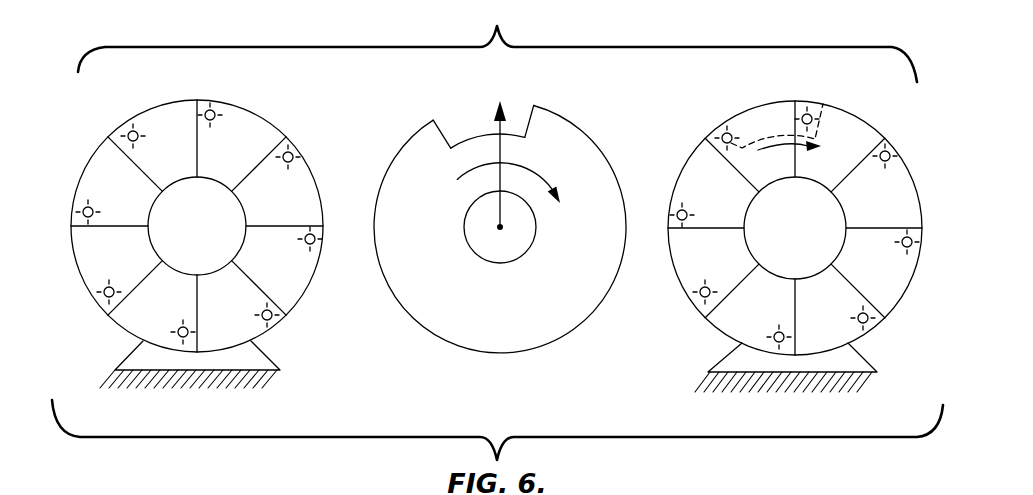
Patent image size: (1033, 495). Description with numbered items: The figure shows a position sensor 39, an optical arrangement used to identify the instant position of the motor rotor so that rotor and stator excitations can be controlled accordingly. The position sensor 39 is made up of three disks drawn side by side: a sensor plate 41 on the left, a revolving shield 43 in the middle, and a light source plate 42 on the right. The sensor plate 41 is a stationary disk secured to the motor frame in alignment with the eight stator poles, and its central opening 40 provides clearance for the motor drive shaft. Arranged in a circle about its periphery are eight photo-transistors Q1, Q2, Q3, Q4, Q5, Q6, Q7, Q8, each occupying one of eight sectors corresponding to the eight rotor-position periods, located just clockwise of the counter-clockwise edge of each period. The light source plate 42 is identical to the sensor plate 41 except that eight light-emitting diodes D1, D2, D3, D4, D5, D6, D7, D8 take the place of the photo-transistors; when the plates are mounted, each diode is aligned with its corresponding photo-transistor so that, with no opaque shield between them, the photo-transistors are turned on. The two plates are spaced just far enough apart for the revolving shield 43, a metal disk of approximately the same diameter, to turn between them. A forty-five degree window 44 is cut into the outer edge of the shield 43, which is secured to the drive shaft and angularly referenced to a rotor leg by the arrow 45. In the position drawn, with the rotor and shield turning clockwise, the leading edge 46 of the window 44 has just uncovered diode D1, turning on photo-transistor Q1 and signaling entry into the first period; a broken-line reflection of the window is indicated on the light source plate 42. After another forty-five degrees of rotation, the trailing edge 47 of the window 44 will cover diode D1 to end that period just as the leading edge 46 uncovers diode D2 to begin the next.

The position sensor 39 is at (497, 231).
The central opening 40 is at (185, 236).
The sensor plate 41 is at (332, 297).
The light source plate 42 is at (674, 338).
The revolving shield 43 is at (437, 358).
The window 44 is at (475, 123).
The arrow 45 is at (502, 147).
The leading edge 46 is at (518, 117).
The trailing edge 47 is at (447, 140).
The photo-transistor Q1 is at (215, 110).
The photo-transistor Q2 is at (292, 155).
The photo-transistor Q3 is at (313, 242).
The photo-transistor Q4 is at (270, 318).
The photo-transistor Q5 is at (176, 329).
The photo-transistor Q6 is at (103, 297).
The photo-transistor Q7 is at (95, 205).
The photo-transistor Q8 is at (138, 130).
The light-emitting diode D1 is at (812, 112).
The light-emitting diode D2 is at (893, 163).
The light-emitting diode D3 is at (900, 246).
The light-emitting diode D4 is at (862, 326).
The light-emitting diode D5 is at (772, 333).
The light-emitting diode D6 is at (697, 290).
The light-emitting diode D7 is at (686, 210).
The light-emitting diode D8 is at (733, 132).